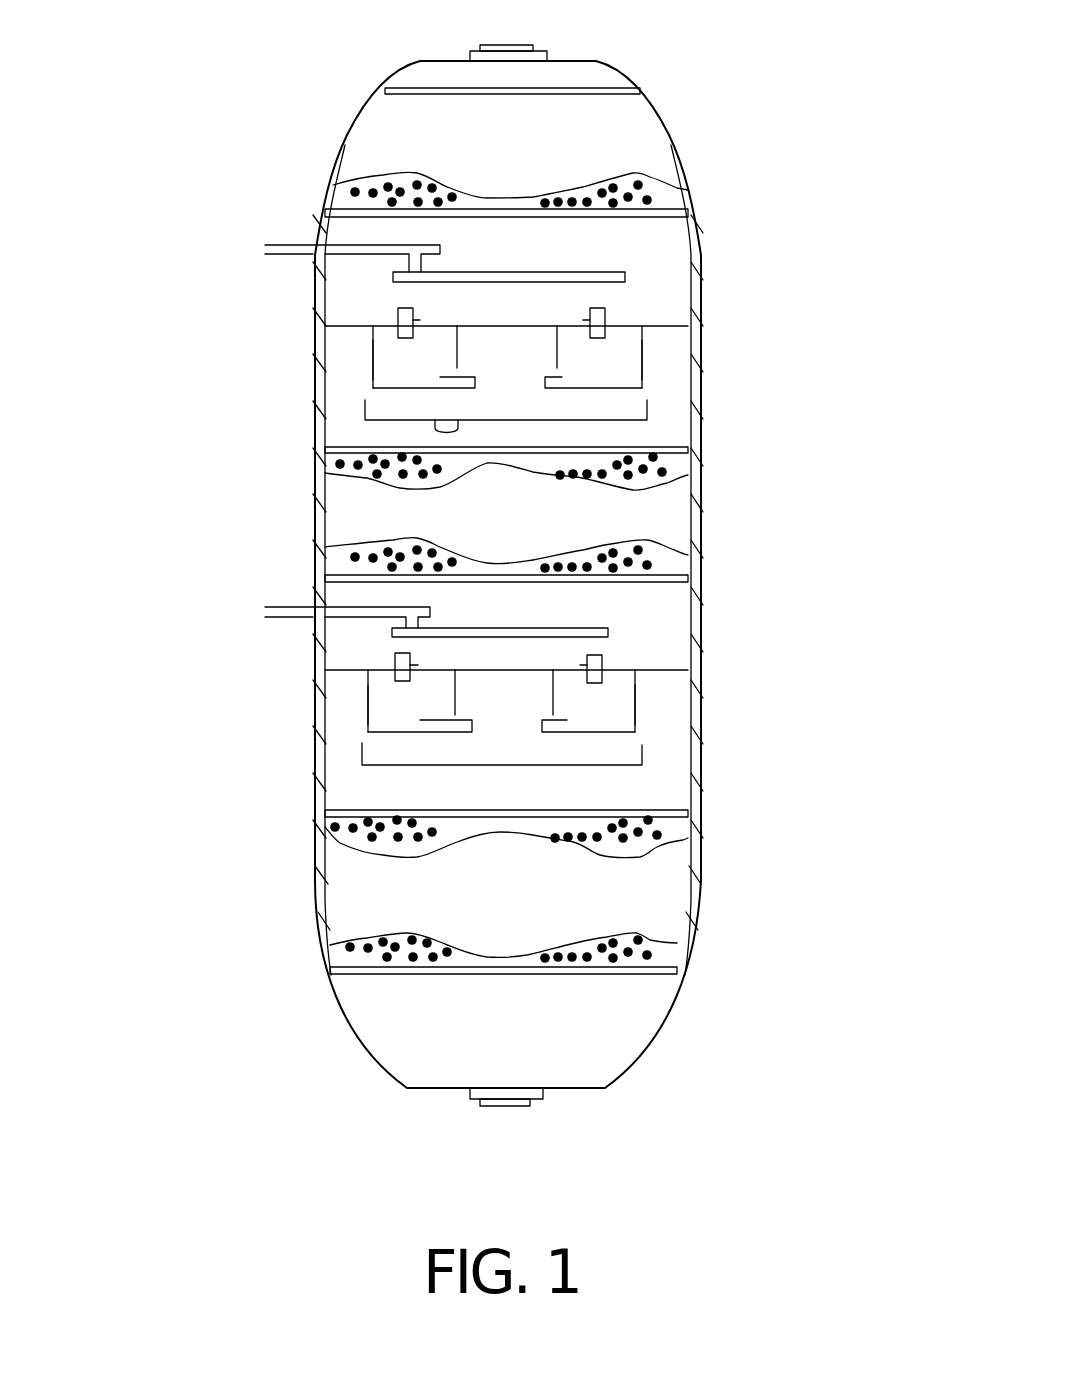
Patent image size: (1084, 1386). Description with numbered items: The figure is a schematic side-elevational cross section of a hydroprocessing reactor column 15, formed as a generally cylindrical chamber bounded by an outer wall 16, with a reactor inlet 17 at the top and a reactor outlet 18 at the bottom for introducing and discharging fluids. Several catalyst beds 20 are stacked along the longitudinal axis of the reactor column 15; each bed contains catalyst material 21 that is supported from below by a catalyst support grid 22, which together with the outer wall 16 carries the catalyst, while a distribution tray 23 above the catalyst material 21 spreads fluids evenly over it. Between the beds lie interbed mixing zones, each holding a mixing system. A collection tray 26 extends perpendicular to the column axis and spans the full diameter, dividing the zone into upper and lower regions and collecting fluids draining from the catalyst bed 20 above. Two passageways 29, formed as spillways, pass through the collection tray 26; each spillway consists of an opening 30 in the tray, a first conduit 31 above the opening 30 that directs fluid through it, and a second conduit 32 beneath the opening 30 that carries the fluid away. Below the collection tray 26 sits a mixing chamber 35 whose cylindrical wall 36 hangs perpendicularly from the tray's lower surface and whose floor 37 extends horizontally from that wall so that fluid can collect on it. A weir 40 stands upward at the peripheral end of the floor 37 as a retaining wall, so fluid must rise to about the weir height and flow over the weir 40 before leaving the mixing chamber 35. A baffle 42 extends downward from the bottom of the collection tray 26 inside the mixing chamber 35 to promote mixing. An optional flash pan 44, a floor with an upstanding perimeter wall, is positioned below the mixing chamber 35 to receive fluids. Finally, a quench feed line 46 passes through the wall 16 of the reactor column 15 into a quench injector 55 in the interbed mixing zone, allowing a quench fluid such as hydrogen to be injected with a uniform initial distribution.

The reactor column 15 is at (712, 157).
The outer wall 16 is at (316, 370).
The reactor inlet 17 is at (517, 44).
The reactor outlet 18 is at (518, 1106).
The catalyst bed 20 is at (565, 165).
The catalyst material 21 is at (355, 192).
The catalyst support grid 22 is at (678, 220).
The distribution tray 23 is at (628, 88).
The collection tray 26 is at (497, 326).
The passageway 29 is at (603, 307).
The opening 30 is at (413, 326).
The first conduit 31 is at (413, 320).
The second conduit 32 is at (398, 338).
The mixing chamber 35 is at (645, 357).
The cylindrical wall 36 is at (373, 340).
The floor 37 is at (373, 388).
The weir 40 is at (475, 377).
The baffle 42 is at (557, 348).
The flash pan 44 is at (447, 432).
The quench feed line 46 is at (293, 238).
The quench injector 55 is at (505, 274).